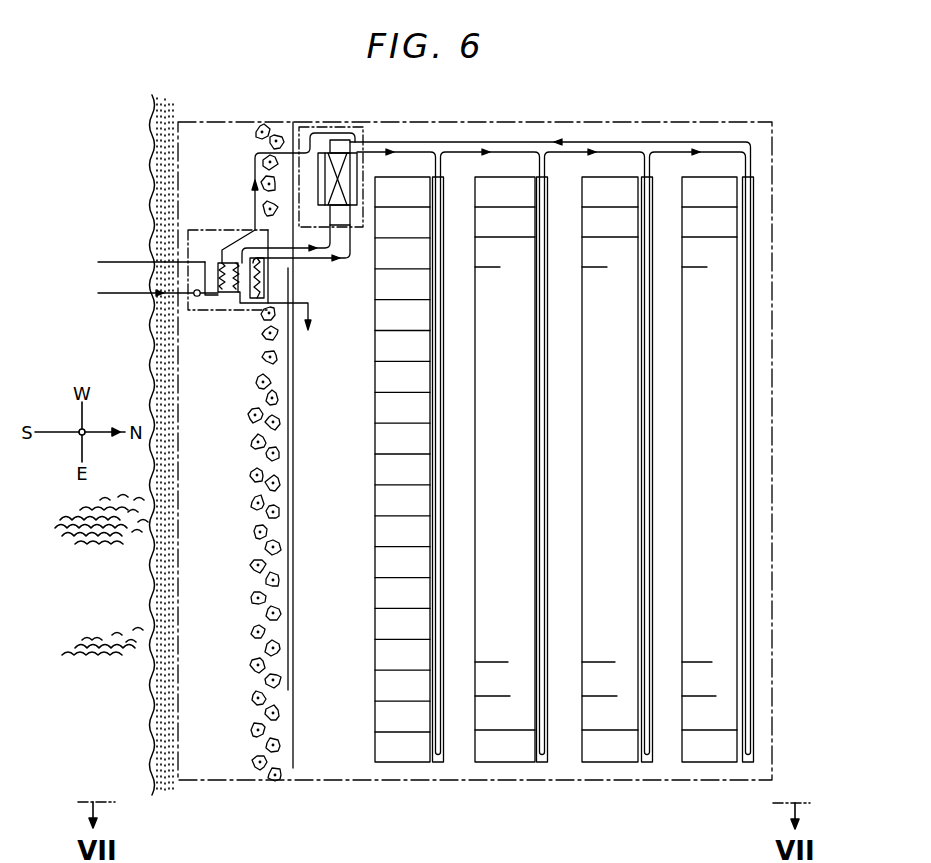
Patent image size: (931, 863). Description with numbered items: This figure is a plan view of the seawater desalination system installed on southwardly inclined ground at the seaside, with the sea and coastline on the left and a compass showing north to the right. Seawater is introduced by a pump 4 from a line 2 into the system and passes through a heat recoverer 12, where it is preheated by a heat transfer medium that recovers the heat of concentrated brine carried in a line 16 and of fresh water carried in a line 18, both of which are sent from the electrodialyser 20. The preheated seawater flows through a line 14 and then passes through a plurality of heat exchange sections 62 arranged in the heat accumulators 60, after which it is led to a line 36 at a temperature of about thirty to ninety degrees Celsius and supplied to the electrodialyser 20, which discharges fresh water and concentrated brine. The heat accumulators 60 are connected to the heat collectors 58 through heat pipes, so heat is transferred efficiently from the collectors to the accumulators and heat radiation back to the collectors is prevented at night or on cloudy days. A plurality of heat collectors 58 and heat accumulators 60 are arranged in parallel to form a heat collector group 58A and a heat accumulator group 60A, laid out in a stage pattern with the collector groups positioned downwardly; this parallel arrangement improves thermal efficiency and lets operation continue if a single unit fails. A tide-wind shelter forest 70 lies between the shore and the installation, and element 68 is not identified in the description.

The line 2 is at (125, 295).
The pump 4 is at (196, 298).
The heat recoverer 12 is at (242, 304).
The line 14 is at (254, 210).
The line 16 is at (324, 244).
The line 18 is at (347, 259).
The electrodialyser 20 is at (360, 173).
The line 36 is at (608, 140).
The heat collector 58 is at (709, 187).
The heat collector group 58A is at (377, 404).
The heat accumulator 60 is at (754, 214).
The heat accumulator group 60A is at (442, 438).
The heat exchange section 62 is at (436, 485).
The pit 68 is at (457, 768).
The tide-wind shelter forest 70 is at (258, 571).